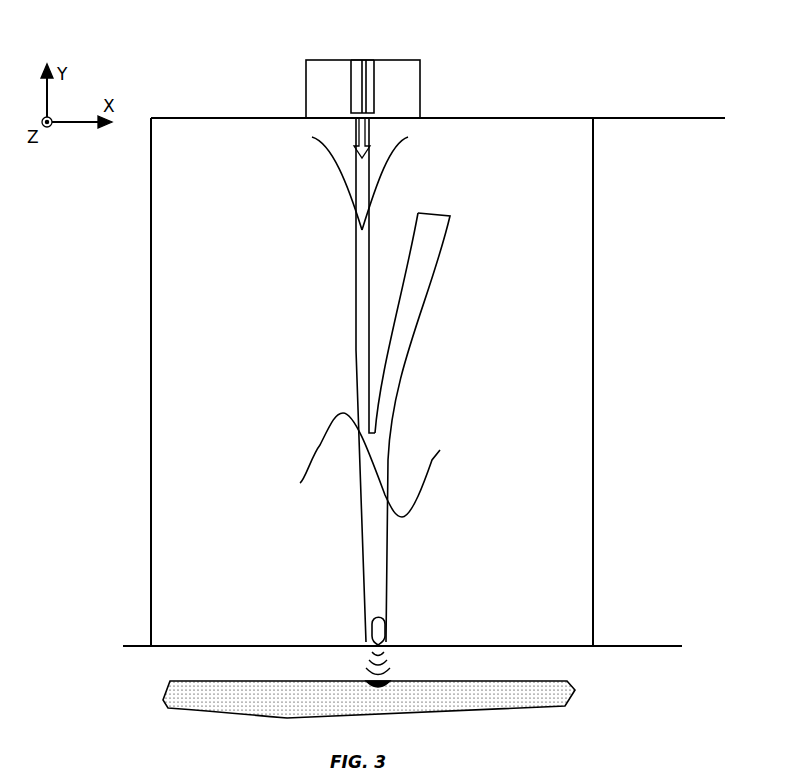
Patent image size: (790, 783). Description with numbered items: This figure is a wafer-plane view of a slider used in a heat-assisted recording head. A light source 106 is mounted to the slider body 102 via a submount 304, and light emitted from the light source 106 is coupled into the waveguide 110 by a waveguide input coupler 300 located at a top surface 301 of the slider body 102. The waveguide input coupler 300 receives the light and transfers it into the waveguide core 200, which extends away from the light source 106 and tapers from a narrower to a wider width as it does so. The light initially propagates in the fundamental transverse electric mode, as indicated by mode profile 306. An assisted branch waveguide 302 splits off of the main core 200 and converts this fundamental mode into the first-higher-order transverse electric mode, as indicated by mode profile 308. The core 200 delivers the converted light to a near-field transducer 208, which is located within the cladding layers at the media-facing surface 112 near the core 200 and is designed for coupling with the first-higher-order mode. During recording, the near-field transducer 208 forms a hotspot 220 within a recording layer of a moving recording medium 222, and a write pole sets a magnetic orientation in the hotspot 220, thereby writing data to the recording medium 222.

The slider body 102 is at (512, 116).
The light source 106 is at (362, 60).
The waveguide 110 is at (276, 337).
The media-facing surface 112 is at (652, 648).
The waveguide core 200 is at (356, 288).
The near-field transducer 208 is at (370, 622).
The hotspot 220 is at (378, 688).
The recording medium 222 is at (542, 700).
The waveguide input coupler 300 is at (350, 150).
The top surface 301 is at (676, 120).
The assisted branch waveguide 302 is at (428, 247).
The submount 304 is at (313, 75).
The mode profile 306 is at (378, 150).
The mode profile 308 is at (425, 463).